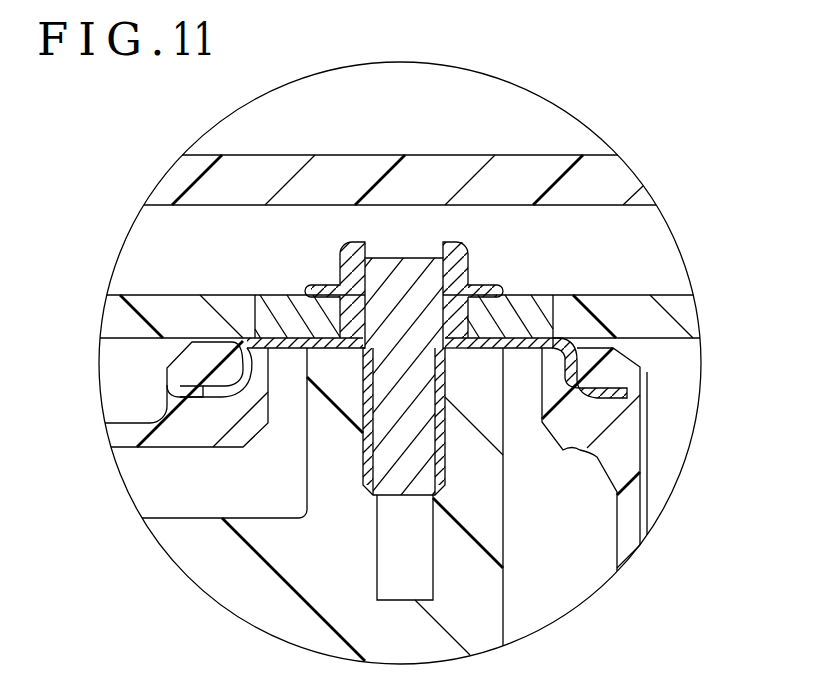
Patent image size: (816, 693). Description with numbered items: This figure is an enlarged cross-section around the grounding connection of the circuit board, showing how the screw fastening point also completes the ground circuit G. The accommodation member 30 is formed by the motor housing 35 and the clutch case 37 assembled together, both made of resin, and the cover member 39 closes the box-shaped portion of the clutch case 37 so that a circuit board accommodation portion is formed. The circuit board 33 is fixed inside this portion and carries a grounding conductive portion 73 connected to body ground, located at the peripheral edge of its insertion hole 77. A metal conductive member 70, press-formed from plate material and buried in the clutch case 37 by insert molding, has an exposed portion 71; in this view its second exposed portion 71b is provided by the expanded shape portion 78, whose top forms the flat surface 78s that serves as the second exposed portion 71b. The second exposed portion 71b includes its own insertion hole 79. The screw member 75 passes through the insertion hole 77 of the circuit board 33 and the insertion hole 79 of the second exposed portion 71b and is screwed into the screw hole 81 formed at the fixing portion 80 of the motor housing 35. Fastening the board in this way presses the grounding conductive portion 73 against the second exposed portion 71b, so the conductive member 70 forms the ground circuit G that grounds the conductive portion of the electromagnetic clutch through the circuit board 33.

The accommodation member 30 is at (400, 155).
The cover member 39 is at (355, 155).
The circuit board 33 is at (162, 295).
The exposed portion 71 is at (270, 322).
The second exposed portion 71b is at (295, 295).
The grounding conductive portion 73 is at (528, 297).
The ground circuit G is at (185, 377).
The screw member 75 is at (408, 258).
The insertion hole 77 is at (460, 258).
The insertion hole 79 is at (449, 348).
The screw hole 81 is at (378, 562).
The fixing portion 80 is at (307, 468).
The conductive member 70 is at (179, 390).
The motor housing 35 is at (503, 641).
The expanded shape portion 78 is at (573, 357).
The flat surface 78s is at (526, 332).
The clutch case 37 is at (650, 517).